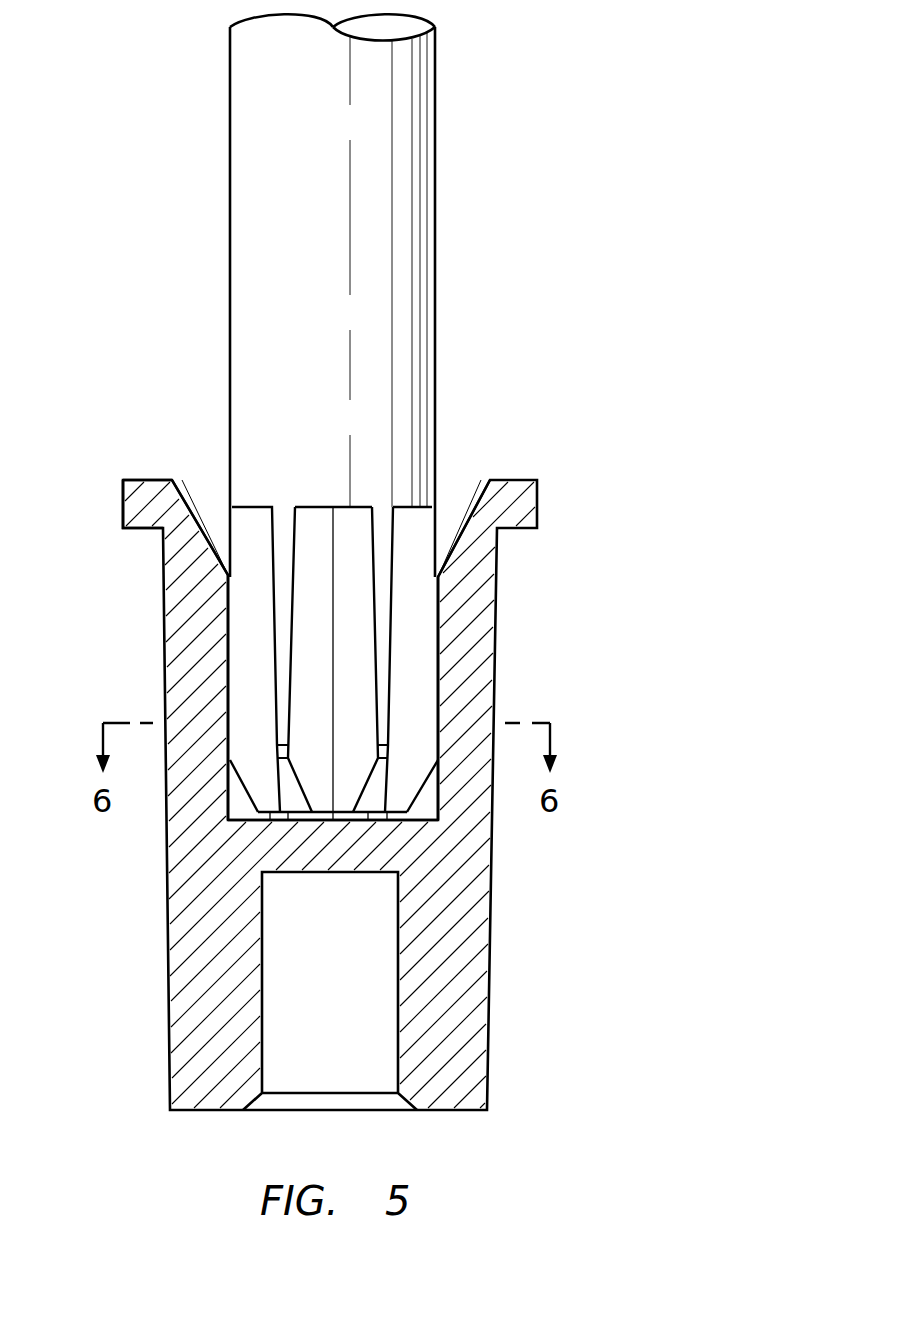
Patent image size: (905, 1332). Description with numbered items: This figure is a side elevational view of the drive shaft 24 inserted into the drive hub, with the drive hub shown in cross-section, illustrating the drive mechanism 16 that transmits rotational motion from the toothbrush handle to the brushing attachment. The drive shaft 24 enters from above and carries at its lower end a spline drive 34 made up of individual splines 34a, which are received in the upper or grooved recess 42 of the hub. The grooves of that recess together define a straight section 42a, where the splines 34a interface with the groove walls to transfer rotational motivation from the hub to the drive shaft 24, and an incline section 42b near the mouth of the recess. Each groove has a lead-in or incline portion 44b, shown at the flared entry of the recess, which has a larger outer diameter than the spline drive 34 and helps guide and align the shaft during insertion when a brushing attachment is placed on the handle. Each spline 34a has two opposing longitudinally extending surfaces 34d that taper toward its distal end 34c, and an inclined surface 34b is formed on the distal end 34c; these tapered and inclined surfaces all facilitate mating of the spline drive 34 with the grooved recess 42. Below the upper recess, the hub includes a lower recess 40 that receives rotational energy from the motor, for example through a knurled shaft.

The drive mechanism 16 is at (101, 591).
The drive shaft 24 is at (403, 175).
The spline drive 34 is at (440, 583).
The splines 34a is at (280, 637).
The inclined surface 34b is at (293, 800).
The distal end 34c is at (296, 806).
The longitudinally extending surfaces 34d is at (277, 668).
The lower recess 40 is at (342, 1017).
The upper recess 42 is at (203, 443).
The straight section 42a is at (443, 674).
The incline section 42b is at (458, 500).
The incline portion 44b is at (208, 520).